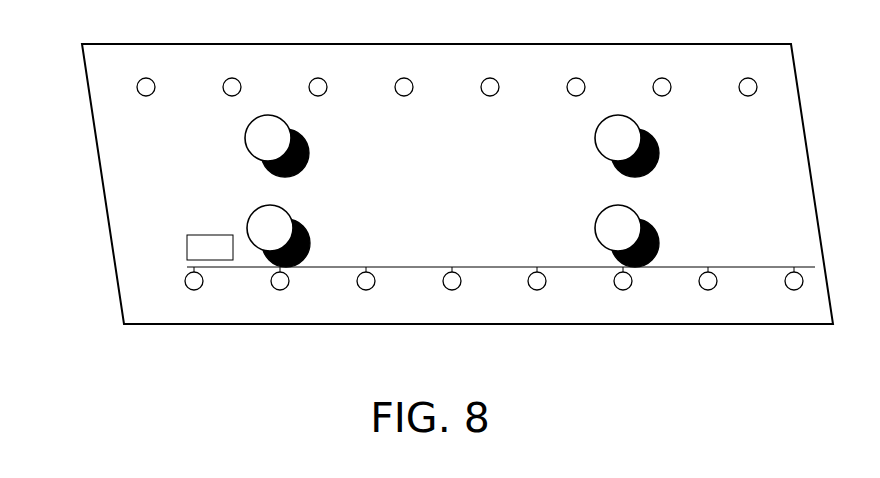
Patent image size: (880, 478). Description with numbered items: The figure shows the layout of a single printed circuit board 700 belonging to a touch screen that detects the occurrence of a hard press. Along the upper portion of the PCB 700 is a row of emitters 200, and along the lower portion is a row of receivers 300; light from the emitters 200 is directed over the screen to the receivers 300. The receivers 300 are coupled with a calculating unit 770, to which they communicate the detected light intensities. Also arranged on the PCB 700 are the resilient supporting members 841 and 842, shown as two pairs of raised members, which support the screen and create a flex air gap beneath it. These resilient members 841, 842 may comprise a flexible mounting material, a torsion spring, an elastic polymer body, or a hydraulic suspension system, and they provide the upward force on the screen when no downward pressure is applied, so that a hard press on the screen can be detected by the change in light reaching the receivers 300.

The printed circuit board 700 is at (98, 148).
The emitter 200 is at (447, 76).
The receiver 300 is at (500, 288).
The resilient supporting member 841 is at (277, 191).
The resilient supporting member 842 is at (627, 191).
The calculating unit 770 is at (210, 267).